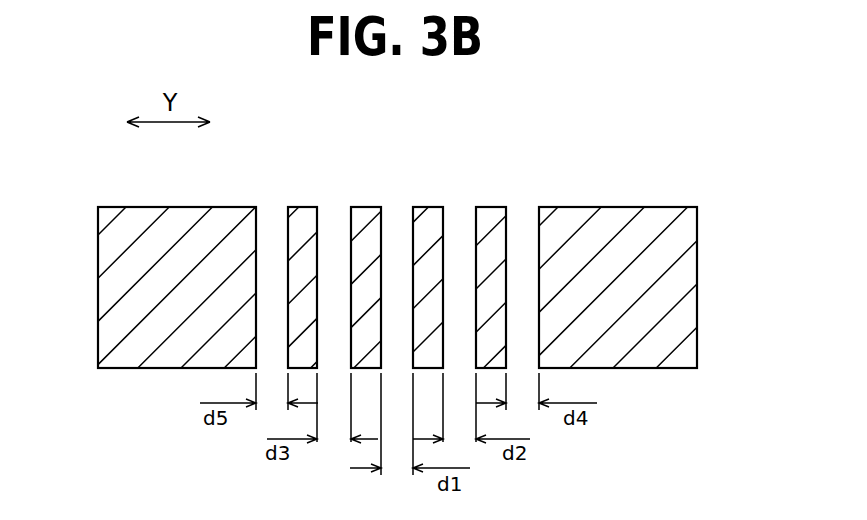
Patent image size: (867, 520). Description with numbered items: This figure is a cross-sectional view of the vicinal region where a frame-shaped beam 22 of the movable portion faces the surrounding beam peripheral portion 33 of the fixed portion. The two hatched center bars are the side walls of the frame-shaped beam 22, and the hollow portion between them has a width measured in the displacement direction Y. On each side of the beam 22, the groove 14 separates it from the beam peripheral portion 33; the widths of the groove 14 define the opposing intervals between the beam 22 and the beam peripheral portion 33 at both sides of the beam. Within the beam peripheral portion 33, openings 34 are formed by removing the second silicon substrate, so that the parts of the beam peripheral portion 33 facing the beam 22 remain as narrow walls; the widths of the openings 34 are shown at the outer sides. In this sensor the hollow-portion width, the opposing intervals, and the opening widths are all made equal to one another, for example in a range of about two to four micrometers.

The groove 14 is at (333, 218).
The beam 22 is at (428, 207).
The beam peripheral portion 33 is at (623, 206).
The openings 34 is at (272, 218).